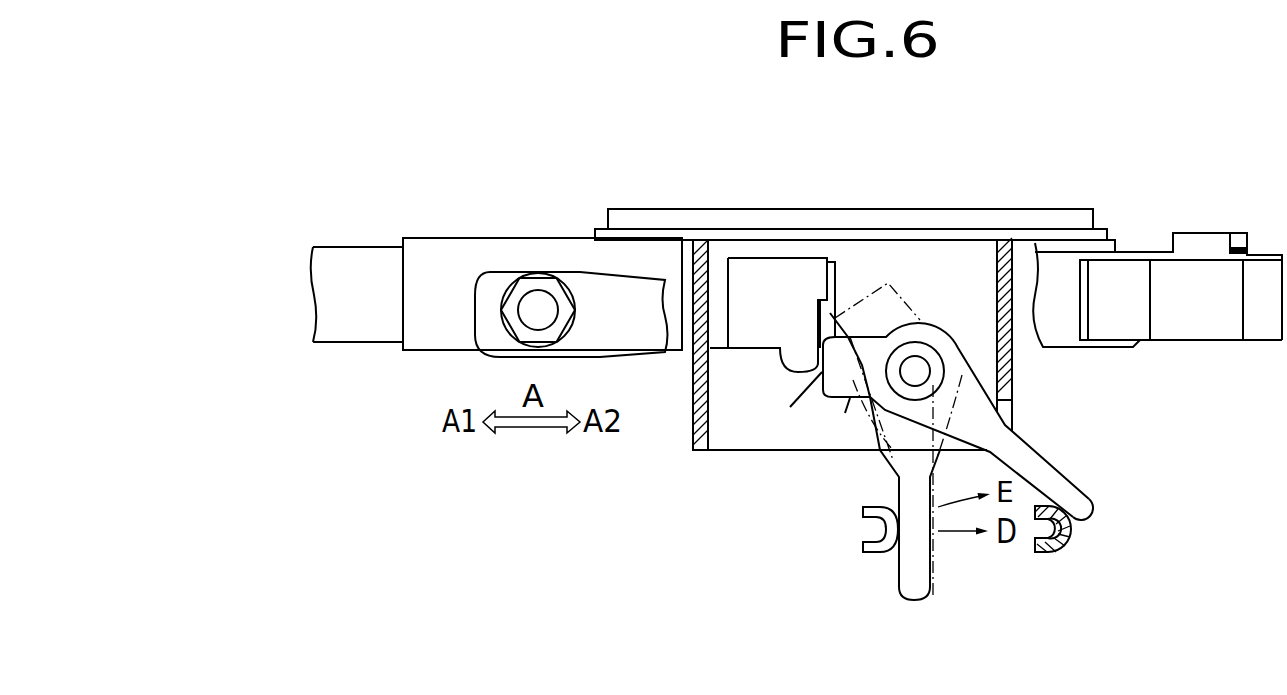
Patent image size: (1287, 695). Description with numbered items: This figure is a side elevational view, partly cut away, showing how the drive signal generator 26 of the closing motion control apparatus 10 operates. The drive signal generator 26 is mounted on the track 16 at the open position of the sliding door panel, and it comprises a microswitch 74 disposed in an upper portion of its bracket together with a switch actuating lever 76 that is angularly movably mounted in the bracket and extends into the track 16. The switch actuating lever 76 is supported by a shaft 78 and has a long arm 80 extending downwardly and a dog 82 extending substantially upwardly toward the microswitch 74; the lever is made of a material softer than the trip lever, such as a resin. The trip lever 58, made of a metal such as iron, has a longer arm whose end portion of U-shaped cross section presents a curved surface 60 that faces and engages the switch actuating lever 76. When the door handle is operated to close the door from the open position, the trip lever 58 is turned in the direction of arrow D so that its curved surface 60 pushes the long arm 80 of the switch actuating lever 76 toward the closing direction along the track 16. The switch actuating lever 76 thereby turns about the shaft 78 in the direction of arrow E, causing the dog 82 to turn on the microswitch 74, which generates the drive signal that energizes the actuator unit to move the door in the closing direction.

The closing motion control apparatus 10 is at (1270, 121).
The track 16 is at (361, 238).
The drive signal generator 26 is at (944, 201).
The trip lever 58 is at (1064, 551).
The curved surface 60 is at (1071, 534).
The microswitch 74 is at (795, 275).
The switch actuating lever 76 is at (1038, 443).
The shaft 78 is at (915, 372).
The long arm 80 is at (1081, 502).
The dog 82 is at (832, 395).